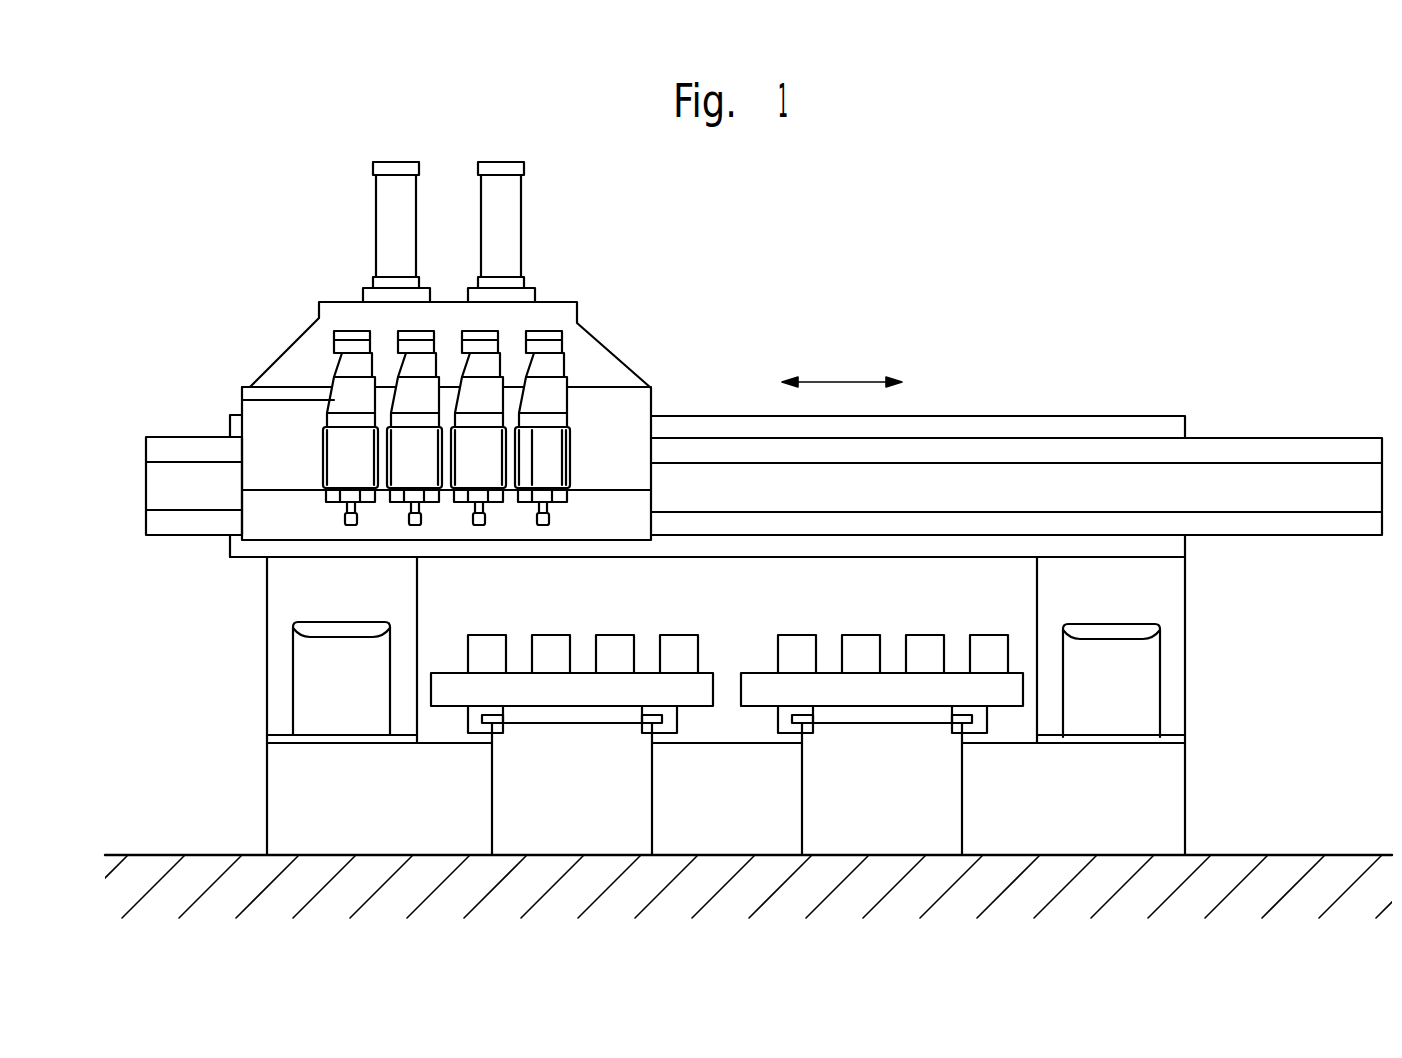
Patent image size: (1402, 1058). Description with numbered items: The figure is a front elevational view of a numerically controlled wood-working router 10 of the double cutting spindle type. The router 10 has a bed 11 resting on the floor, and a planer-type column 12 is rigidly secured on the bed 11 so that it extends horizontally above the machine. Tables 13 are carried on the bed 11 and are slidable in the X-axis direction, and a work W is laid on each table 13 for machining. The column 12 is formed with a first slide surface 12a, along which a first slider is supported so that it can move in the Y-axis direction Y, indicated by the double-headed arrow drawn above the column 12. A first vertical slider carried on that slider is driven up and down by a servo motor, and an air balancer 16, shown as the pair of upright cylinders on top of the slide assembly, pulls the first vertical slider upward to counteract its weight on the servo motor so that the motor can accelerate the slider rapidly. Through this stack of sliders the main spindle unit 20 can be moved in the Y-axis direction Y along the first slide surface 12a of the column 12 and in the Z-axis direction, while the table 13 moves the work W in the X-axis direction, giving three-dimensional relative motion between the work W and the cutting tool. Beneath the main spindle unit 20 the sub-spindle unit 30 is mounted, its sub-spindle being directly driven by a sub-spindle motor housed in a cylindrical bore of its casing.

The router 10 is at (265, 272).
The bed 11 is at (1172, 778).
The planer-type column 12 is at (1012, 428).
The first slide surface 12a is at (1335, 453).
The table 13 is at (698, 692).
The air balancer 16 is at (488, 183).
The main spindle unit 20 is at (560, 397).
The sub-spindle unit 30 is at (560, 477).
The work W is at (605, 662).
The Y-axis direction Y is at (842, 371).